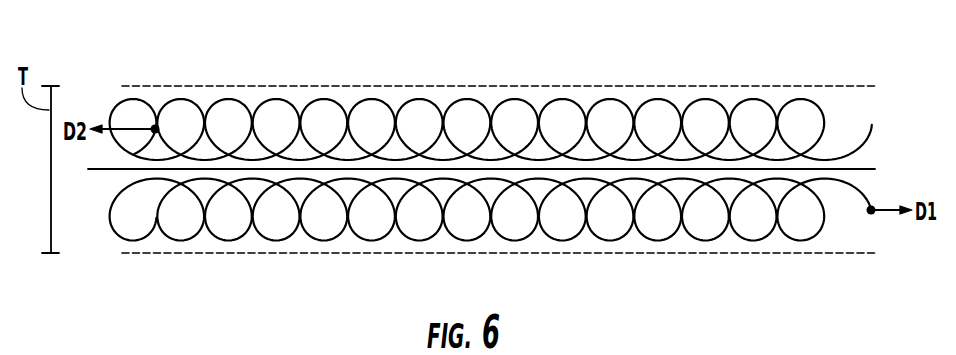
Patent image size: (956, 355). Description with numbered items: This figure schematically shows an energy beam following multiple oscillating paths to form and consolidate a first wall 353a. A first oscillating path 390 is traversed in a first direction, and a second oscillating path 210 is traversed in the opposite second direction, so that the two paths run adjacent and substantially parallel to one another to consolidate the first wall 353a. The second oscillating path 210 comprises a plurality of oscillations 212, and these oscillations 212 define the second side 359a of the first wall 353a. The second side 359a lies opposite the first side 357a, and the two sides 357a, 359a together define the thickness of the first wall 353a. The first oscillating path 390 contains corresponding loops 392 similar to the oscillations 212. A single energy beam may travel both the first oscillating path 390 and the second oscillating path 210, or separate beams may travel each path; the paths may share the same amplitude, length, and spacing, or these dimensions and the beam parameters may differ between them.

The second oscillating path 210 is at (494, 97).
The oscillations 212 is at (710, 100).
The first oscillating path 390 is at (491, 244).
The loop of second coil 392 is at (753, 241).
The first wall 353a is at (498, 54).
The second side 359a is at (575, 86).
The first side 357a is at (690, 254).